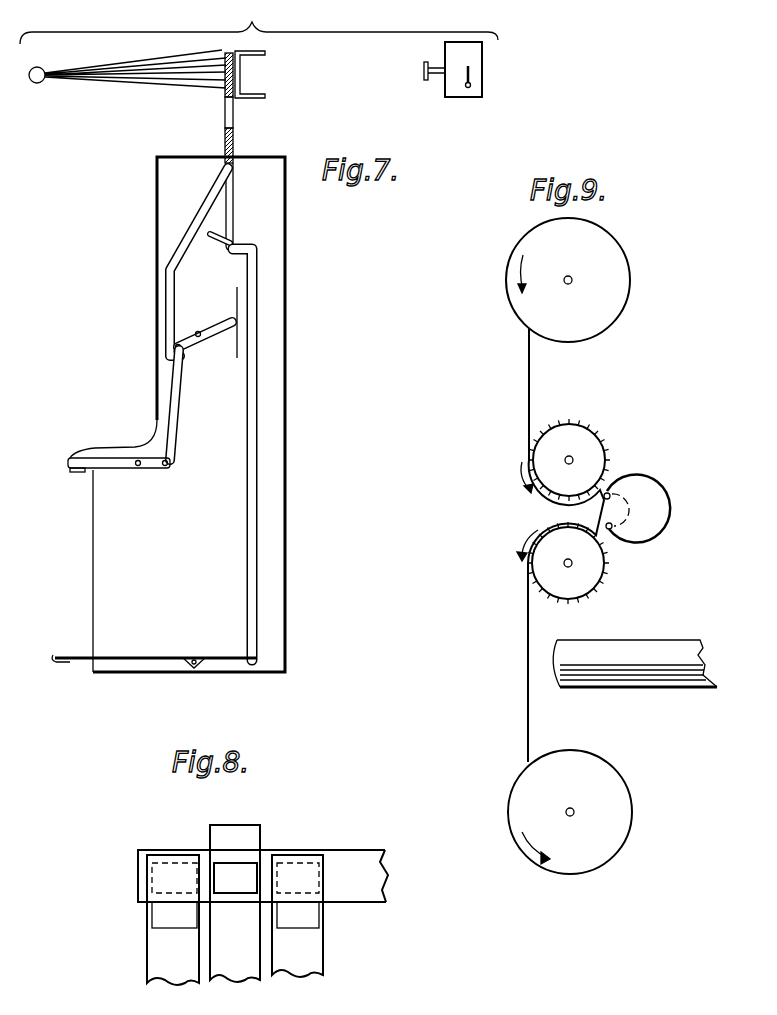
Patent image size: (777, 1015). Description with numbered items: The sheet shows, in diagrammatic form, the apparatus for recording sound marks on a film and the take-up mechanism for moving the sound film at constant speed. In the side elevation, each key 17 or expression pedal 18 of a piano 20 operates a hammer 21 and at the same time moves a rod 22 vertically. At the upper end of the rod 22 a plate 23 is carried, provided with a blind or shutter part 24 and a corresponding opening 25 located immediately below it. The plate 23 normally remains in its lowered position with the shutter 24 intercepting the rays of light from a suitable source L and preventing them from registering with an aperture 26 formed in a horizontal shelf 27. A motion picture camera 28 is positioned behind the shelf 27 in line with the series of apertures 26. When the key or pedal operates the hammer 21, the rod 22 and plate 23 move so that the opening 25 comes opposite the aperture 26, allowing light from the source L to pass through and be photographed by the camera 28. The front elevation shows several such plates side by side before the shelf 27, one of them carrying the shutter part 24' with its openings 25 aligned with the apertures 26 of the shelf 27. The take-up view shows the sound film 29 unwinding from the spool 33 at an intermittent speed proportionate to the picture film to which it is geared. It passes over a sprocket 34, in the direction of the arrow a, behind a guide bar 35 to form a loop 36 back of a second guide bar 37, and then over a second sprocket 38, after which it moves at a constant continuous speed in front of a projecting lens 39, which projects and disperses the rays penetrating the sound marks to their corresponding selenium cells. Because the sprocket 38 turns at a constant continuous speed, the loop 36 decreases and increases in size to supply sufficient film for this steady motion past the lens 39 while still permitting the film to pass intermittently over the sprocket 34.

In FIG. 7, the light source L is at (37, 83).
In FIG. 7, the key 17 is at (72, 458).
In FIG. 7, the expression pedal 18 is at (53, 655).
In FIG. 7, the piano 20 is at (228, 398).
In FIG. 7, the hammer 21 is at (232, 320).
In FIG. 7, the rod 22 is at (235, 197).
In FIG. 7, the plate 23 is at (233, 145).
In FIG. 8, the plate 23 is at (312, 947).
In FIG. 7, the shutter part 24 is at (209, 86).
In FIG. 8, the shutter part 24' is at (248, 851).
In FIG. 7, the opening 25 is at (233, 118).
In FIG. 8, the opening 25 is at (312, 915).
In FIG. 7, the aperture 26 is at (250, 70).
In FIG. 8, the aperture 26 is at (152, 867).
In FIG. 8, the horizontal shelf 27 is at (367, 868).
In FIG. 7, the motion picture camera 28 is at (468, 92).
In FIG. 9, the sound film 29 is at (527, 375).
In FIG. 9, the arrow a is at (524, 475).
In FIG. 9, the spool 33 is at (615, 268).
In FIG. 9, the sprocket 34 is at (585, 437).
In FIG. 9, the guide bar 35 is at (612, 490).
In FIG. 9, the loop 36 is at (666, 508).
In FIG. 9, the second guide bar 37 is at (611, 530).
In FIG. 9, the second sprocket 38 is at (555, 563).
In FIG. 9, the projecting lens 39 is at (620, 670).